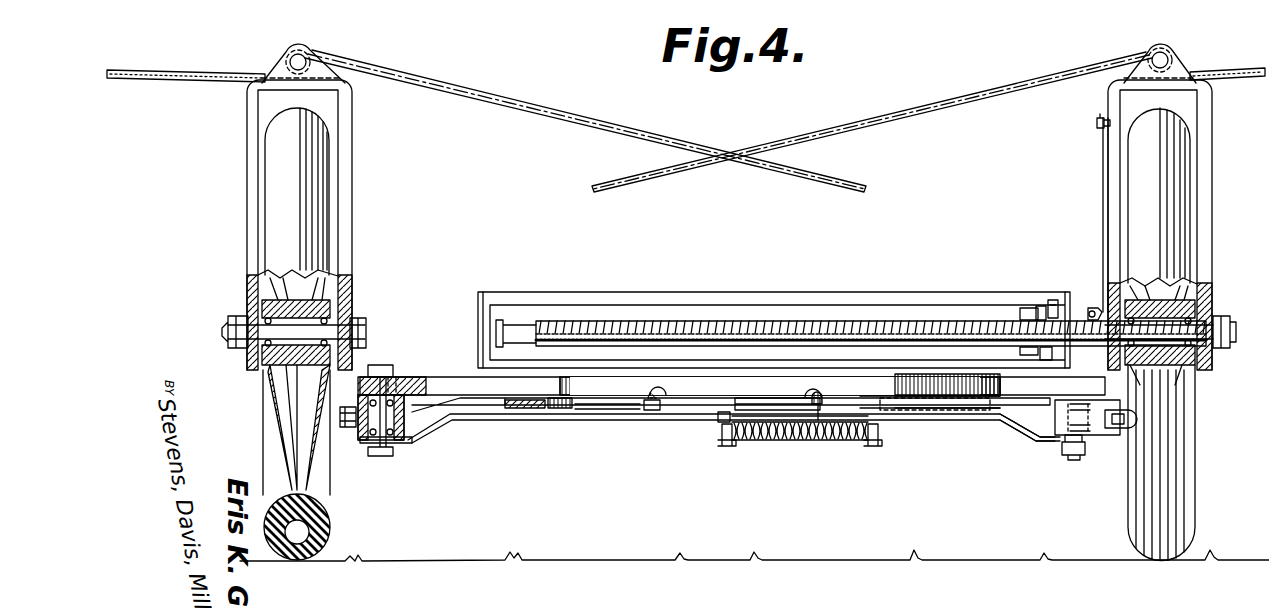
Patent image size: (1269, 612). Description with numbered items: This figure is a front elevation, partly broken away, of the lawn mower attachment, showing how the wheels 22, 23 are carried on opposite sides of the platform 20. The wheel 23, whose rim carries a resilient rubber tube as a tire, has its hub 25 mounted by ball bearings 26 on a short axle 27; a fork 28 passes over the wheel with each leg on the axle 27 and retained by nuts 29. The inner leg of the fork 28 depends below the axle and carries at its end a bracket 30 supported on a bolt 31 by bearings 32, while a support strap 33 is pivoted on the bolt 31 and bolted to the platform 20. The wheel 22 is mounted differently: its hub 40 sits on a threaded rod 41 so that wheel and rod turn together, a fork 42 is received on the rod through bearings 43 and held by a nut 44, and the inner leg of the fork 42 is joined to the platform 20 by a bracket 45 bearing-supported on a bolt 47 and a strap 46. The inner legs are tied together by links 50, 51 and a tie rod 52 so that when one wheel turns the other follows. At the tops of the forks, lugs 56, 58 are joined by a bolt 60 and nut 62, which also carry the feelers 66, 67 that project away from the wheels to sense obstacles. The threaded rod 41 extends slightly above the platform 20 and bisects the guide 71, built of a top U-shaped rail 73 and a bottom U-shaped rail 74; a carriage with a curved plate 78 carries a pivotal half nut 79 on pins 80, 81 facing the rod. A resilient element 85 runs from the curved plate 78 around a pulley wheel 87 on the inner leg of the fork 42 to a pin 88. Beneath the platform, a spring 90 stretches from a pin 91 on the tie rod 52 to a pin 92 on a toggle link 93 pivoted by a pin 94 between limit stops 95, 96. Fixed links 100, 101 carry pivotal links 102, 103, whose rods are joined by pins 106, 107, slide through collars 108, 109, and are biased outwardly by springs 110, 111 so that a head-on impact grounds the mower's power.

The platform 20 is at (446, 378).
The wheel 22 is at (1180, 196).
The wheel 23 is at (335, 212).
The hub 25 is at (300, 278).
The ball bearings 26 is at (340, 306).
The axle 27 is at (340, 334).
The fork 28 is at (250, 186).
The nuts 29 is at (228, 324).
The bracket 30 is at (356, 445).
The bolt or pin 31 is at (384, 376).
The bearings 32 is at (400, 394).
The support strap or bar 33 is at (418, 442).
The hub 40 is at (1192, 300).
The threaded rod 41 is at (714, 322).
The fork 42 is at (1212, 236).
The bearings 43 is at (1140, 280).
The nut 44 is at (1222, 346).
The bracket 45 is at (1098, 440).
The strap 46 is at (1036, 440).
The pin or bolt 47 is at (1076, 461).
The link 50 is at (1128, 420).
The link 51 is at (340, 416).
The tie rod 52 is at (795, 426).
The lug 56 is at (1182, 62).
The lug 58 is at (286, 58).
The bolt 60 is at (1160, 52).
The nut 62 is at (304, 54).
The feeler 66 is at (1238, 80).
The feeler 67 is at (176, 80).
The guide 71 is at (878, 288).
The top U-shaped rail 73 is at (628, 292).
The bottom U-shaped rail 74 is at (615, 372).
The curved plate 78 is at (1052, 300).
The half nut 79 is at (1028, 308).
The pin 80 is at (1040, 306).
The pin 81 is at (1042, 360).
The resilient element 85 is at (1102, 226).
The pulley wheel 87 is at (1092, 306).
The pin 88 is at (1097, 126).
The spring 90 is at (760, 442).
The pin 91 is at (726, 446).
The pin 92 is at (872, 446).
The toggle link 93 is at (770, 398).
The pin 94 is at (718, 418).
The limit stop 95 is at (882, 396).
The limit stop 96 is at (578, 410).
The link 100 is at (946, 400).
The link 101 is at (526, 410).
The pivotal link 102 is at (882, 416).
The pivotal link 103 is at (612, 412).
The pin 106 is at (820, 400).
The pin 107 is at (668, 388).
The collar 108 is at (822, 422).
The collar 109 is at (648, 412).
The spring 110 is at (814, 396).
The spring 111 is at (648, 392).